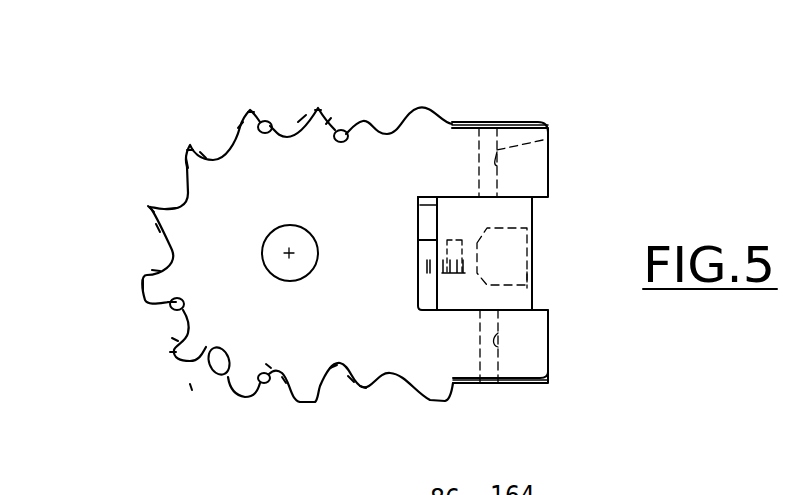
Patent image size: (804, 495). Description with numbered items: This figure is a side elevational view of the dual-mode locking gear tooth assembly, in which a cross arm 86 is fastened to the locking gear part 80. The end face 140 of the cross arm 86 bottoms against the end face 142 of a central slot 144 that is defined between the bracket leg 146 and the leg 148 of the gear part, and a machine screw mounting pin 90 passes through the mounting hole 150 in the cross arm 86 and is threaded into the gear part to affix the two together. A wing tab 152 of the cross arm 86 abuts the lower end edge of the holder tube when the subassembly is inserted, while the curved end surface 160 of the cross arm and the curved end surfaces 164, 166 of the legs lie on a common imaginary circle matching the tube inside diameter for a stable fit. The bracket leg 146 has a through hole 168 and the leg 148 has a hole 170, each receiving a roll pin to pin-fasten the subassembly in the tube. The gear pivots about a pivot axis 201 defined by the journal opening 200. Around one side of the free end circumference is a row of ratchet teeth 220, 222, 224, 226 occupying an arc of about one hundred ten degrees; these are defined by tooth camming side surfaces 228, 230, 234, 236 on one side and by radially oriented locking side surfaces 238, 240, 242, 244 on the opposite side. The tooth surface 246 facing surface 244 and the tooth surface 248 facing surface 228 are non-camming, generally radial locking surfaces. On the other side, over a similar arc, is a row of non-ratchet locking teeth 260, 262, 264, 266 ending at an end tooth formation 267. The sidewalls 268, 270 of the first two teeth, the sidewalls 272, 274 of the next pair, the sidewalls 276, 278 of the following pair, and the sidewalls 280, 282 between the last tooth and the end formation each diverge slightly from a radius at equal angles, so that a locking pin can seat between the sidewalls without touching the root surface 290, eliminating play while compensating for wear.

The locking gear part 80 is at (372, 114).
The cross arm 86 is at (536, 213).
The machine screw mounting pin 90 is at (533, 256).
The end face of cross arm 140 is at (420, 200).
The end face of central slot 142 is at (425, 278).
The central slot 144 is at (468, 200).
The bracket leg 146 is at (523, 132).
The leg 148 is at (527, 375).
The mounting hole 150 is at (503, 286).
The wing tab 152 is at (425, 224).
The curved end surface of cross arm 160 is at (512, 300).
The curved end surface of leg 164 is at (490, 122).
The curved end surface of leg 166 is at (490, 385).
The through hole 168 is at (543, 140).
The hole 170 is at (510, 340).
The journal opening 200 is at (292, 280).
The pivot axis 201 is at (288, 253).
The ratchet tooth 220 is at (150, 207).
The ratchet tooth 222 is at (190, 145).
The ratchet tooth 224 is at (252, 110).
The ratchet tooth 226 is at (318, 108).
The tooth camming side surface 228 is at (158, 227).
The tooth camming side surface 230 is at (186, 162).
The tooth camming side surface 234 is at (240, 127).
The tooth camming side surface 236 is at (302, 118).
The locking side surface 238 is at (170, 208).
The locking side surface 240 is at (202, 148).
The locking side surface 242 is at (263, 134).
The locking side surface 244 is at (328, 123).
The tooth surface 246 is at (334, 137).
The tooth surface 248 is at (156, 271).
The non-ratchet locking tooth 260 is at (143, 283).
The non-ratchet locking tooth 262 is at (170, 353).
The non-ratchet locking tooth 264 is at (207, 350).
The non-ratchet locking tooth 266 is at (307, 403).
The end tooth formation 267 is at (363, 382).
The sidewall 268 is at (165, 303).
The sidewall 270 is at (174, 338).
The sidewall 272 is at (190, 386).
The sidewall 274 is at (210, 347).
The sidewall 276 is at (267, 364).
The sidewall 278 is at (283, 380).
The sidewall 280 is at (333, 375).
The sidewall 282 is at (350, 378).
The root surface 290 is at (170, 302).